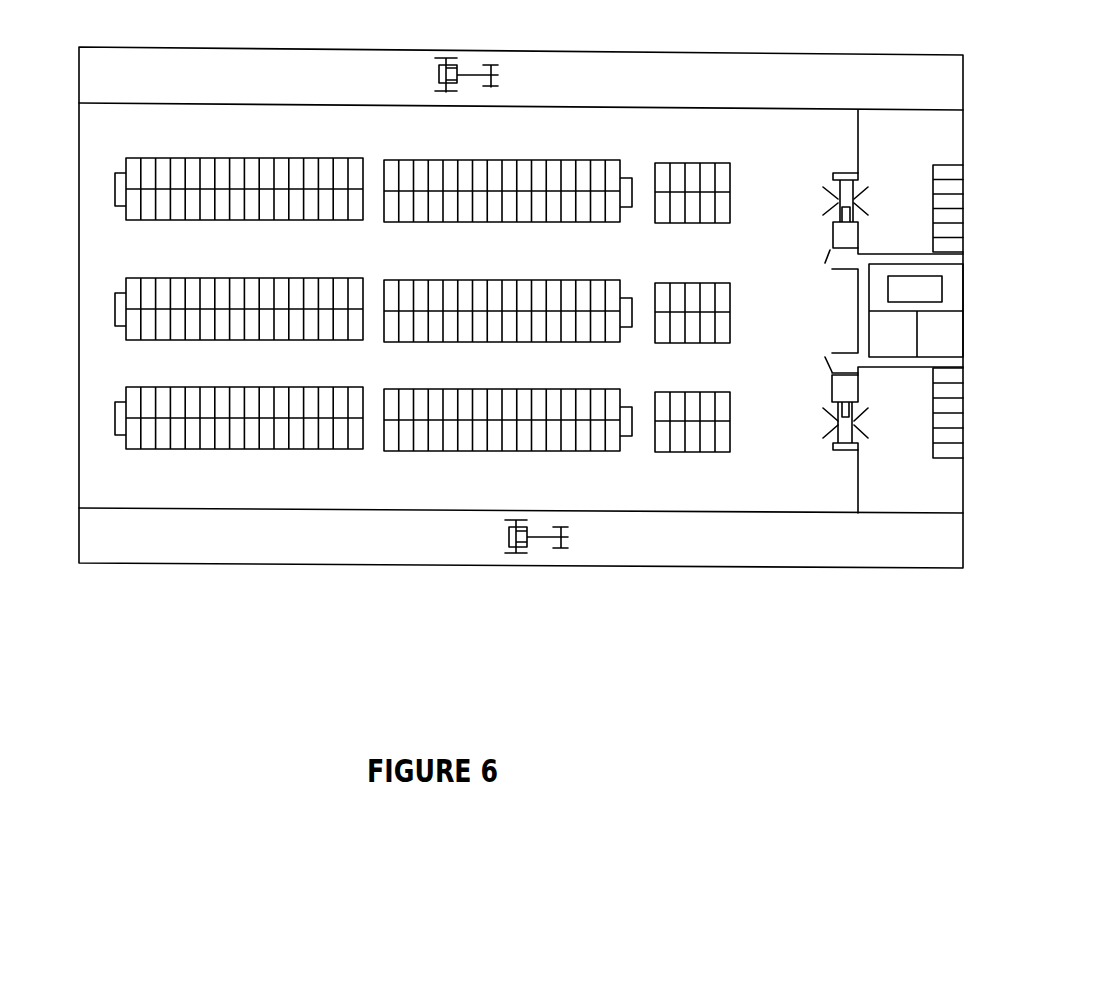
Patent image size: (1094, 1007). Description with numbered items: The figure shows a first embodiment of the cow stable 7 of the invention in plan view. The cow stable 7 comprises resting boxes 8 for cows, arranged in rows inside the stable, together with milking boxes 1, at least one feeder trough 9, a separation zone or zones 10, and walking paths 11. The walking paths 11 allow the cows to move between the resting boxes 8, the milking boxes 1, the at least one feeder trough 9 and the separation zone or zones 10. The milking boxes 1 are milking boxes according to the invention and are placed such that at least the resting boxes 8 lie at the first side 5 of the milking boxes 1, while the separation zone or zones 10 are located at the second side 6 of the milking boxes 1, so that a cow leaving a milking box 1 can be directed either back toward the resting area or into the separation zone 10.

The milking box 1 is at (820, 228).
The first side 5 is at (820, 202).
The second side 6 is at (870, 202).
The cow stable 7 is at (505, 592).
The resting box 8 is at (507, 226).
The feeder trough 9 is at (647, 83).
The separation zone 10 is at (898, 173).
The walking path 11 is at (867, 311).